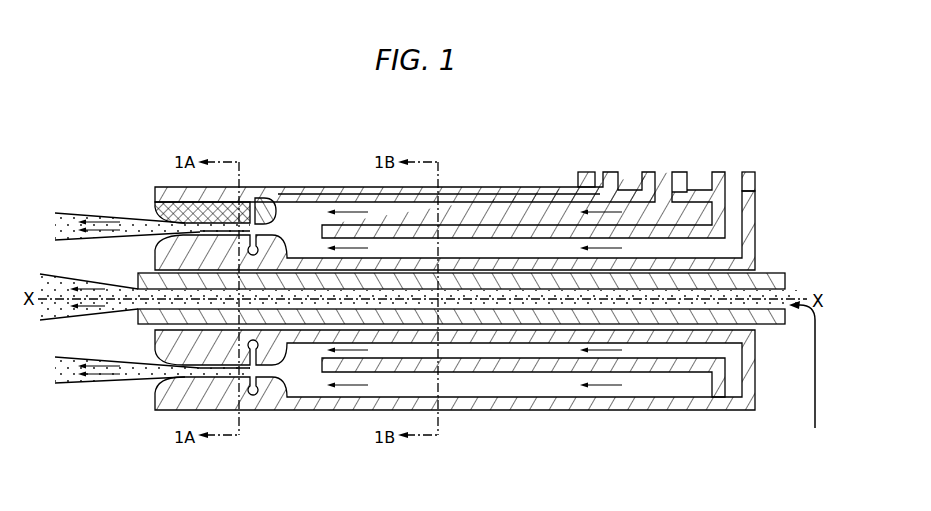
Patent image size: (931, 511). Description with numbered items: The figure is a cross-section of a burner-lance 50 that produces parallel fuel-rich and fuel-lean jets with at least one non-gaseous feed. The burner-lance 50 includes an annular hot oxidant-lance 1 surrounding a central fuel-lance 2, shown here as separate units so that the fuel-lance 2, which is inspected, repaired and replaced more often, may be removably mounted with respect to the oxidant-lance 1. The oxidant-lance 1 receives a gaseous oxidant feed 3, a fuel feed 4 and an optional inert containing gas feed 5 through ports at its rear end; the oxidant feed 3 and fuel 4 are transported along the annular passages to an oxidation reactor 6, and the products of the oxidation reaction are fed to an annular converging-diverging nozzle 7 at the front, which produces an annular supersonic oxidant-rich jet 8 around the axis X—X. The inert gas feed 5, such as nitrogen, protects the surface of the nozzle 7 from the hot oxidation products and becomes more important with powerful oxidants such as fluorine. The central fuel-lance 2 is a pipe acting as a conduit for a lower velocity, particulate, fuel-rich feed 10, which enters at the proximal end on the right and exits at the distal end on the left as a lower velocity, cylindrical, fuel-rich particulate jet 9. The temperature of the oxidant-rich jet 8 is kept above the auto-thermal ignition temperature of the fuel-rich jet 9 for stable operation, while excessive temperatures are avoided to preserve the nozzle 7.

The annular hot oxidant-lance 1 is at (475, 187).
The central fuel-lance 2 is at (768, 273).
The gaseous oxidant feed 3 is at (664, 166).
The fuel feed 4 is at (734, 168).
The inert containing gas feed 5 is at (596, 166).
The oxidation reactor 6 is at (302, 212).
The annular converging-diverging nozzle 7 is at (266, 201).
The annular supersonic oxidant-rich jet 8 is at (130, 218).
The lower velocity fuel rich jet 9 is at (100, 283).
The particulate fuel-rich feed 10 is at (815, 393).
The burner-lance 50 is at (522, 110).